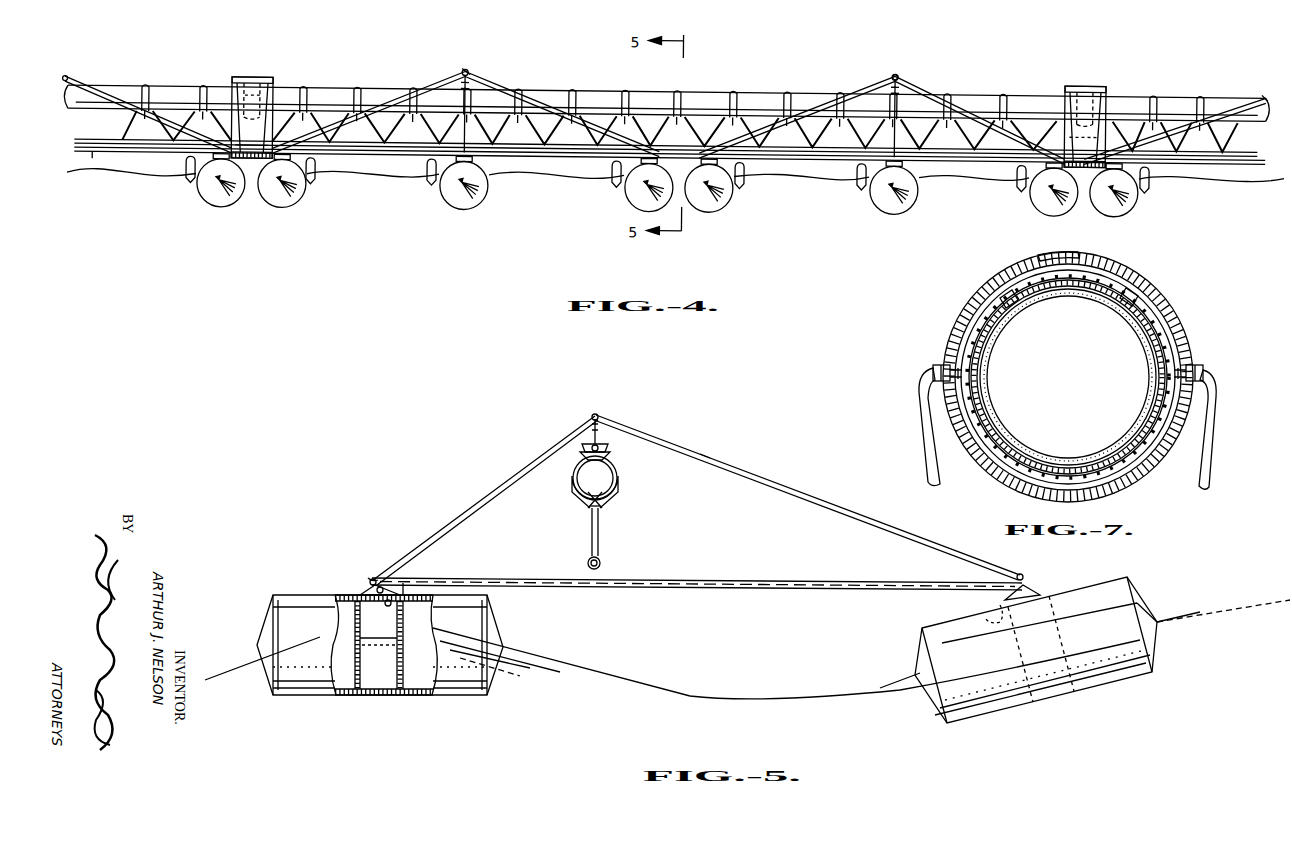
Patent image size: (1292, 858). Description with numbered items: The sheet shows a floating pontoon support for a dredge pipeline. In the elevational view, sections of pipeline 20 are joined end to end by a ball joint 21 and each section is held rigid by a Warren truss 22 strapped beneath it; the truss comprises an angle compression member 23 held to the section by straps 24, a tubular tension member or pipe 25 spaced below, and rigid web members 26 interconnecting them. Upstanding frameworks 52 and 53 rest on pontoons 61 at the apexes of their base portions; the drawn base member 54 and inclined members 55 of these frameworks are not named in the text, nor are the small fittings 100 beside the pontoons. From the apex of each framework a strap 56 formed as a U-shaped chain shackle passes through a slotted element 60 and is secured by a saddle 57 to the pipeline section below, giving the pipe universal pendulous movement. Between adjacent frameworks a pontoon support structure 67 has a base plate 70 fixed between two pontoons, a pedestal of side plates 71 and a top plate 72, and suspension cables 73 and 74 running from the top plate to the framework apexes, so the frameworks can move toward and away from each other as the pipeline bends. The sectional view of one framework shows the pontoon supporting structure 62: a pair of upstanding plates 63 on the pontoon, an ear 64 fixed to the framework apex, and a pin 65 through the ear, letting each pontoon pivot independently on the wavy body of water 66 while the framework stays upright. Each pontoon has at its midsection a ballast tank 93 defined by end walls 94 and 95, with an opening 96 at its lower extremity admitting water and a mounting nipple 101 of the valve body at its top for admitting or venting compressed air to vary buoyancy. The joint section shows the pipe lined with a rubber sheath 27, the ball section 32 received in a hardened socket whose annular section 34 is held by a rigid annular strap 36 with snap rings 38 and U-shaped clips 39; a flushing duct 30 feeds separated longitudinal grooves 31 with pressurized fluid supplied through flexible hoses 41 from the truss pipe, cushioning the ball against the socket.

In FIG. 4, the section of pipeline 20 is at (163, 86).
In FIG. 7, the section of pipeline 20 is at (1002, 328).
In FIG. 4, the ball joint 21 is at (268, 78).
In FIG. 4, the Warren truss 22 is at (93, 160).
In FIG. 5, the Warren truss 22 is at (582, 529).
In FIG. 4, the angle compression member 23 is at (195, 111).
In FIG. 5, the angle compression member 23 is at (612, 498).
In FIG. 4, the straps 24 is at (203, 84).
In FIG. 5, the straps 24 is at (618, 472).
In FIG. 4, the tubular tension member or pipe 25 is at (363, 140).
In FIG. 5, the tubular tension member or pipe 25 is at (602, 560).
In FIG. 4, the web members 26 is at (128, 123).
In FIG. 5, the web members 26 is at (600, 535).
In FIG. 7, the rubber sheath 27 is at (988, 362).
In FIG. 7, the fluid flushing duct 30 is at (956, 362).
In FIG. 7, the grooves 31 is at (1140, 306).
In FIG. 7, the ball section 32 is at (1062, 476).
In FIG. 7, the annular section 34 is at (1025, 475).
In FIG. 7, the rigid annular strap 36 is at (1105, 258).
In FIG. 7, the snap rings 38 is at (1022, 268).
In FIG. 7, the U-shaped clips 39 is at (1075, 252).
In FIG. 7, the flexible hoses 41 is at (922, 440).
In FIG. 4, the framework 52 is at (476, 64).
In FIG. 5, the framework 52 is at (708, 446).
In FIG. 4, the framework 53 is at (68, 68).
In FIG. 4, the lower conduit 54 is at (118, 153).
In FIG. 5, the lower conduit 54 is at (738, 590).
In FIG. 4, the support cable 55 is at (106, 91).
In FIG. 5, the support cable 55 is at (503, 480).
In FIG. 4, the strap 56 is at (464, 64).
In FIG. 5, the strap 56 is at (604, 430).
In FIG. 5, the saddle 57 is at (610, 455).
In FIG. 5, the slotted element 60 is at (590, 415).
In FIG. 4, the pontoons 61 is at (215, 198).
In FIG. 5, the pontoons 61 is at (268, 605).
In FIG. 5, the pontoon supporting structure 62 is at (358, 572).
In FIG. 5, the upstanding plates 63 is at (360, 594).
In FIG. 5, the ear 64 is at (368, 576).
In FIG. 5, the pin 65 is at (386, 588).
In FIG. 4, the body of water 66 is at (563, 173).
In FIG. 5, the body of water 66 is at (700, 690).
In FIG. 4, the pontoon support structure 67 is at (246, 67).
In FIG. 4, the base plate 70 is at (1083, 156).
In FIG. 4, the side plates 71 is at (1068, 126).
In FIG. 4, the top plate 72 is at (1078, 81).
In FIG. 4, the suspension cable 73 is at (243, 110).
In FIG. 4, the suspension cable 74 is at (269, 133).
In FIG. 5, the ballast tank 93 is at (362, 700).
In FIG. 5, the end wall 94 is at (355, 655).
In FIG. 5, the end wall 95 is at (403, 655).
In FIG. 5, the opening 96 is at (380, 696).
In FIG. 4, the fender 100 is at (318, 173).
In FIG. 5, the mounting nipple 101 is at (390, 606).